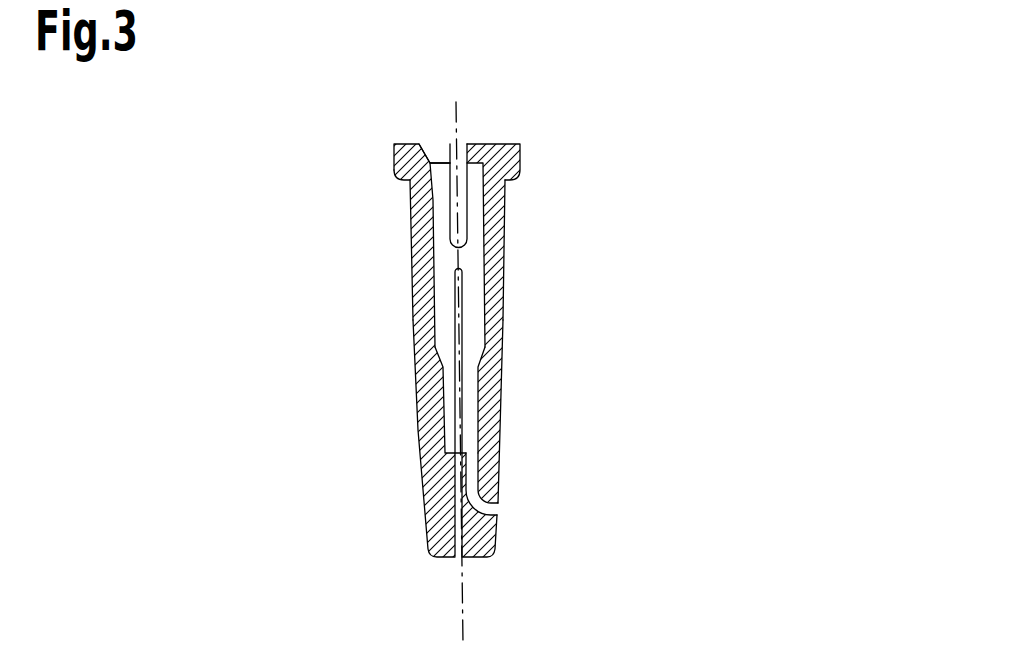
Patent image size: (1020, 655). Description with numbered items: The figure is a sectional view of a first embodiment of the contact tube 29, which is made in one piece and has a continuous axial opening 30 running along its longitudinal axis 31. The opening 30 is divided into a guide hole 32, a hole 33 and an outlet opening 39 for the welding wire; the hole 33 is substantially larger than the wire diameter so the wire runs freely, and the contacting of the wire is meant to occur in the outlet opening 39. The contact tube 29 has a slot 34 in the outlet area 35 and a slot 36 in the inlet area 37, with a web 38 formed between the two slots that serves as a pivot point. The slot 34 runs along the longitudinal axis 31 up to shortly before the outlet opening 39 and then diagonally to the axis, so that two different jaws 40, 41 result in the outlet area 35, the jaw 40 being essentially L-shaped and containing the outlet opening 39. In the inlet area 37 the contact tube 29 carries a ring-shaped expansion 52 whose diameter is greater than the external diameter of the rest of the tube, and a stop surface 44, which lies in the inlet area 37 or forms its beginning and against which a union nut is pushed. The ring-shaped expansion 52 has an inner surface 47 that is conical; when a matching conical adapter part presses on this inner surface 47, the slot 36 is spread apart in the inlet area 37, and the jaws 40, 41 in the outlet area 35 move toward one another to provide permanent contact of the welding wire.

The contact tube 29 is at (225, 431).
The axial opening 30 is at (475, 127).
The longitudinal axis 31 is at (463, 612).
The guide hole 32 is at (445, 312).
The hole 33 is at (448, 395).
The slot 34 is at (463, 412).
The outlet area 35 is at (575, 464).
The slot 36 is at (462, 208).
The inlet area 37 is at (572, 240).
The web 38 is at (385, 260).
The outlet opening 39 is at (467, 535).
The jaw 40 is at (405, 462).
The jaw 41 is at (512, 425).
The stop surface 44 is at (392, 187).
The inner surface 47 is at (434, 96).
The ring-shaped expansion 52 is at (375, 158).